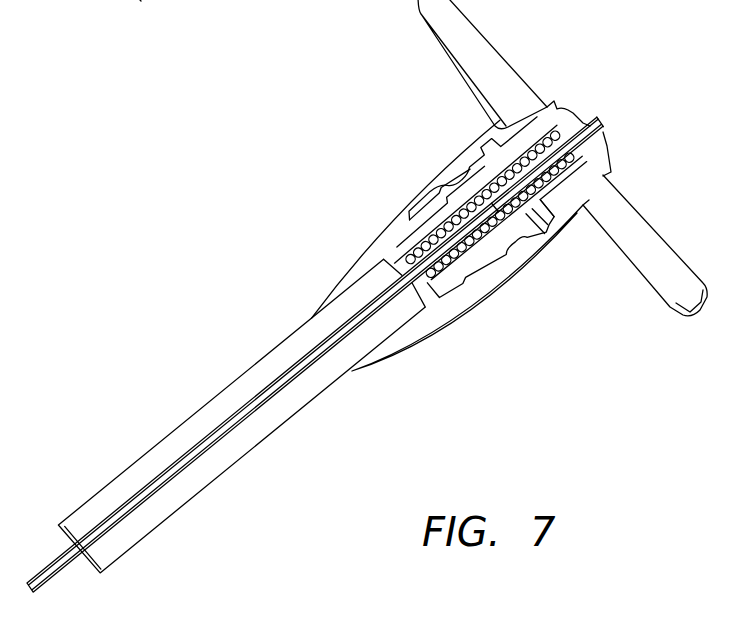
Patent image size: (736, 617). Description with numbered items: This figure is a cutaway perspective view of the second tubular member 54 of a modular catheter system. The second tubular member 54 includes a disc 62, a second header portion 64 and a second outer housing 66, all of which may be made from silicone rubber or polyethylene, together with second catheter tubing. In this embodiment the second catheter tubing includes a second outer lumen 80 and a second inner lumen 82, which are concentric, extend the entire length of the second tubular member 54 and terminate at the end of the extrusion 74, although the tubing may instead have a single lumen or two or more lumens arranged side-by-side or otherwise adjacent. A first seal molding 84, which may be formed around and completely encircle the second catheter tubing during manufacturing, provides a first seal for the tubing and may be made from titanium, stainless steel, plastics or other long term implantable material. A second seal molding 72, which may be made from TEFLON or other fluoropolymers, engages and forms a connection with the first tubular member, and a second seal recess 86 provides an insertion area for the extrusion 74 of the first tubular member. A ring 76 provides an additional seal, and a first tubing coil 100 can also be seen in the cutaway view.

The second tubular member 54 is at (163, 383).
The disc 62 is at (646, 298).
The second header portion 64 is at (437, 333).
The second outer housing 66 is at (228, 472).
The second seal molding 72 is at (569, 100).
The extrusion 74 is at (143, 0).
The ring 76 is at (492, 124).
The second outer lumen 80 is at (597, 116).
The second inner lumen 82 is at (604, 123).
The first seal molding 84 is at (494, 258).
The second seal recess 86 is at (548, 222).
The first tubing coil 100 is at (398, 259).